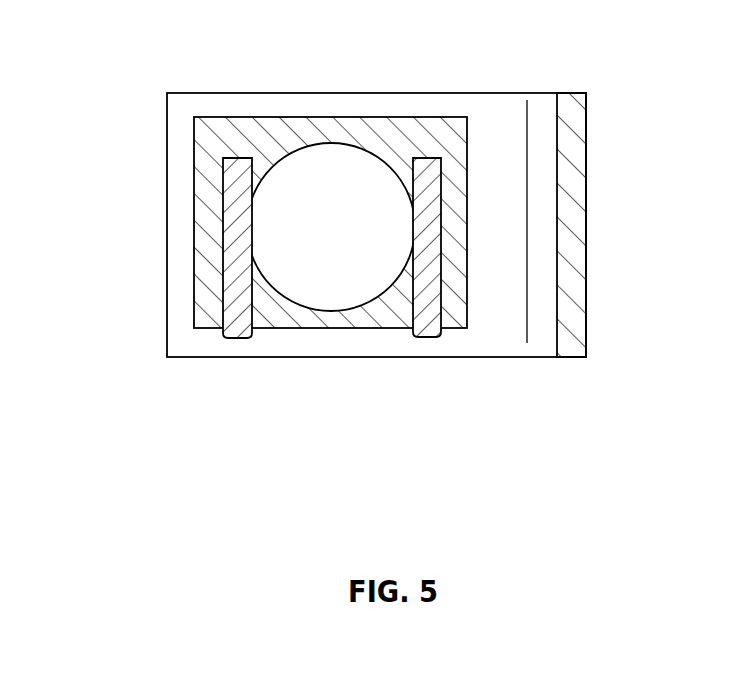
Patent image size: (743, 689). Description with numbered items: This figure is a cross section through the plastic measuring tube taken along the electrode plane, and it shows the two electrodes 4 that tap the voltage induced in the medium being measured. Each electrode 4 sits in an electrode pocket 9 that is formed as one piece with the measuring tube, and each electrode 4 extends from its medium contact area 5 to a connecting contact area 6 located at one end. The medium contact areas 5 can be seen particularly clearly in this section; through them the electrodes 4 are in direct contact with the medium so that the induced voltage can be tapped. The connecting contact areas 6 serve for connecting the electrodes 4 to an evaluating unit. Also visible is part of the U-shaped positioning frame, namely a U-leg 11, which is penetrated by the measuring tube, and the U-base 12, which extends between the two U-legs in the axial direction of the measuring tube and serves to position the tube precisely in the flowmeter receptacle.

The electrode 4 is at (237, 190).
The medium contact area 5 is at (253, 230).
The connecting contact area 6 is at (242, 338).
The electrode pocket 9 is at (327, 133).
The U-leg 11 is at (571, 137).
The U-base 12 is at (574, 185).